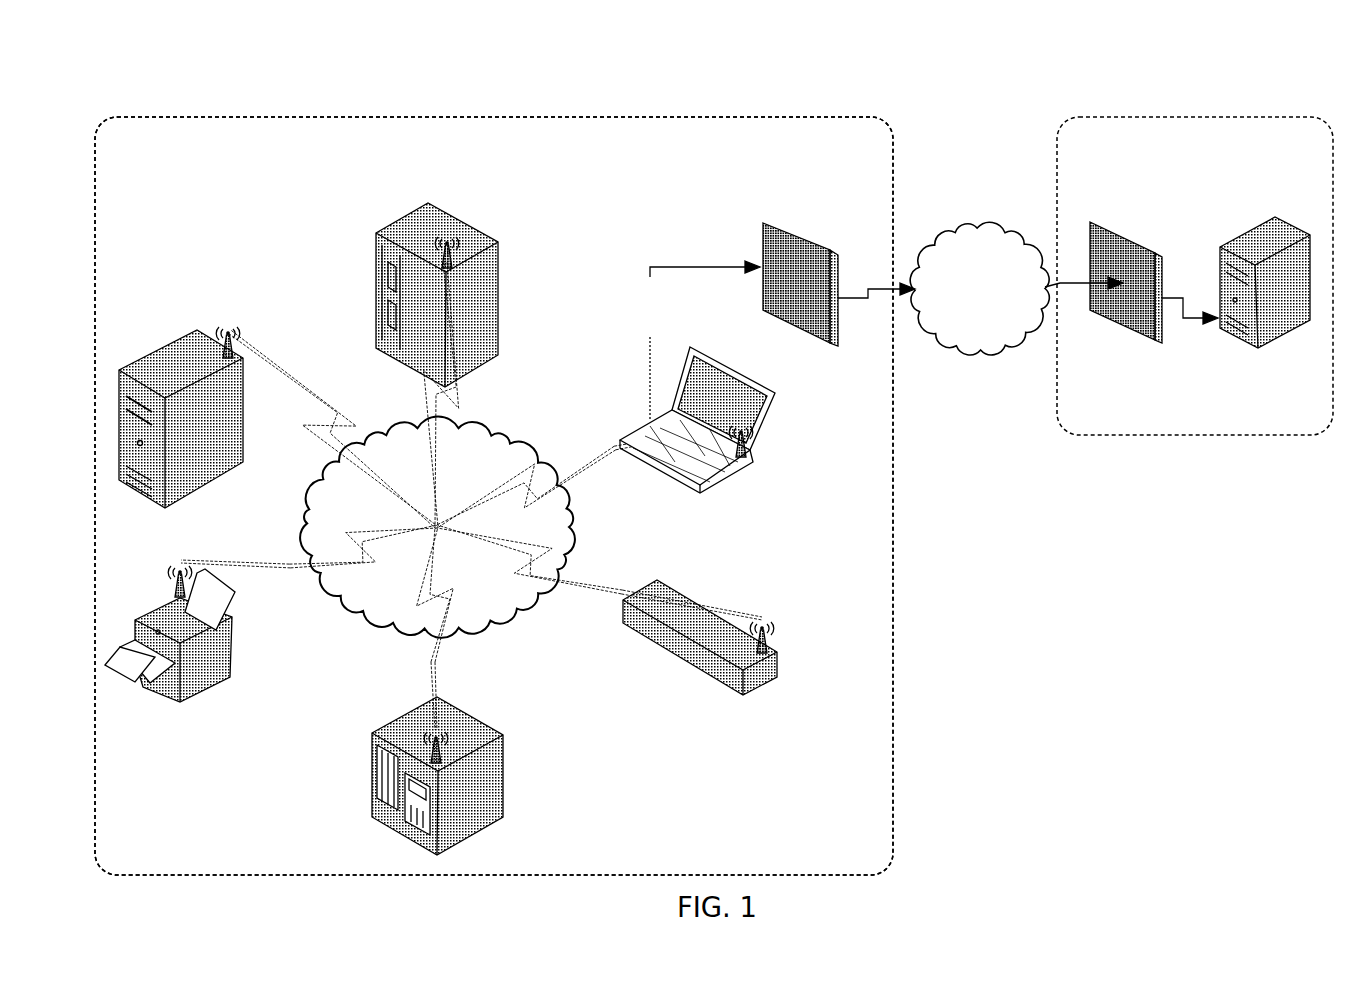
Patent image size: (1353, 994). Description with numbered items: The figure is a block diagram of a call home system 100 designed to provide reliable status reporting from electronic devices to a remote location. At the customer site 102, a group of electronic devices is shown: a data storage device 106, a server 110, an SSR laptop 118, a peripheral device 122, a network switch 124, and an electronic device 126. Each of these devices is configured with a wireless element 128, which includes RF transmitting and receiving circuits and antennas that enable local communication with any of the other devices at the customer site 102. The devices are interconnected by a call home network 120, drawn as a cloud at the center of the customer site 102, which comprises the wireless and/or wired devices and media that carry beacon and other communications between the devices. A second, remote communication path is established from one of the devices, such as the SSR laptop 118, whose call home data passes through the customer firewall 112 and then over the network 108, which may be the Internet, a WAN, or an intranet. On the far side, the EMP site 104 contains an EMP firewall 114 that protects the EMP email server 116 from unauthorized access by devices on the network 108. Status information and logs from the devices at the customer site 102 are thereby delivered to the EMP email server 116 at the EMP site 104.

The call home system 100 is at (328, 86).
The customer site 102 is at (494, 496).
The EMP site 104 is at (1195, 276).
The data storage device 106 is at (499, 240).
The network 108 is at (1016, 288).
The server 110 is at (170, 345).
The customer firewall 112 is at (822, 340).
The EMP firewall 114 is at (1120, 327).
The EMP email server 116 is at (1258, 348).
The SSR laptop 118 is at (702, 493).
The call home network 120 is at (490, 588).
The peripheral device 122 is at (203, 690).
The network switch 124 is at (743, 695).
The electronic device 126 is at (503, 802).
The wireless element 128 is at (227, 323).